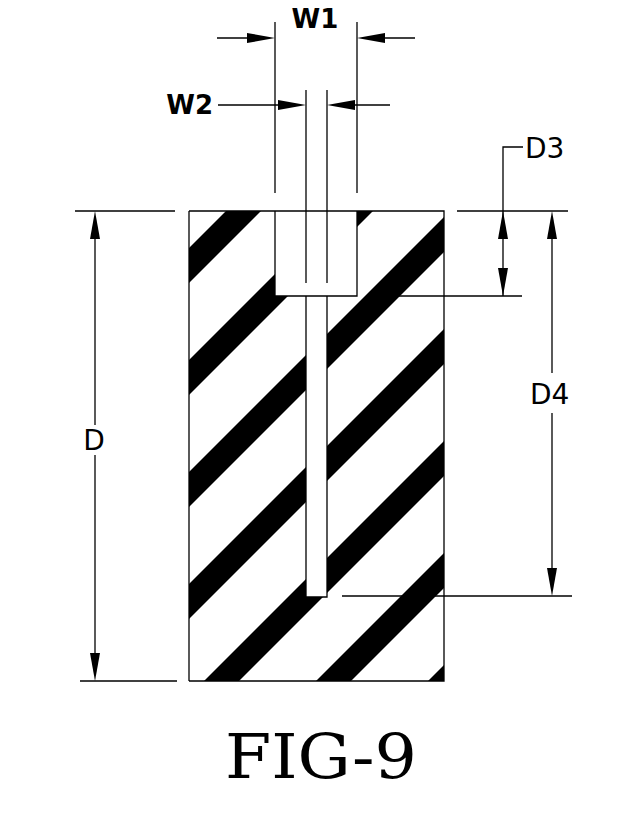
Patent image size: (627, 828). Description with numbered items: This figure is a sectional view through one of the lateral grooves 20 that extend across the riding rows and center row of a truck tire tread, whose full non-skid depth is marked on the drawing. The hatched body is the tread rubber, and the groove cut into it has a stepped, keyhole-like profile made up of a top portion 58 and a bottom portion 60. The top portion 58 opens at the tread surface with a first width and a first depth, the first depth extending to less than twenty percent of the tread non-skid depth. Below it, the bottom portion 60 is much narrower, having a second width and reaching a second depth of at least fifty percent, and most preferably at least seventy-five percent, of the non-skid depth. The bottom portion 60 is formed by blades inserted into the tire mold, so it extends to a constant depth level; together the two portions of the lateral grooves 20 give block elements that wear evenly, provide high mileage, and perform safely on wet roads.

The lateral groove 20 is at (245, 180).
The top portion 58 is at (166, 262).
The bottom portion 60 is at (166, 447).